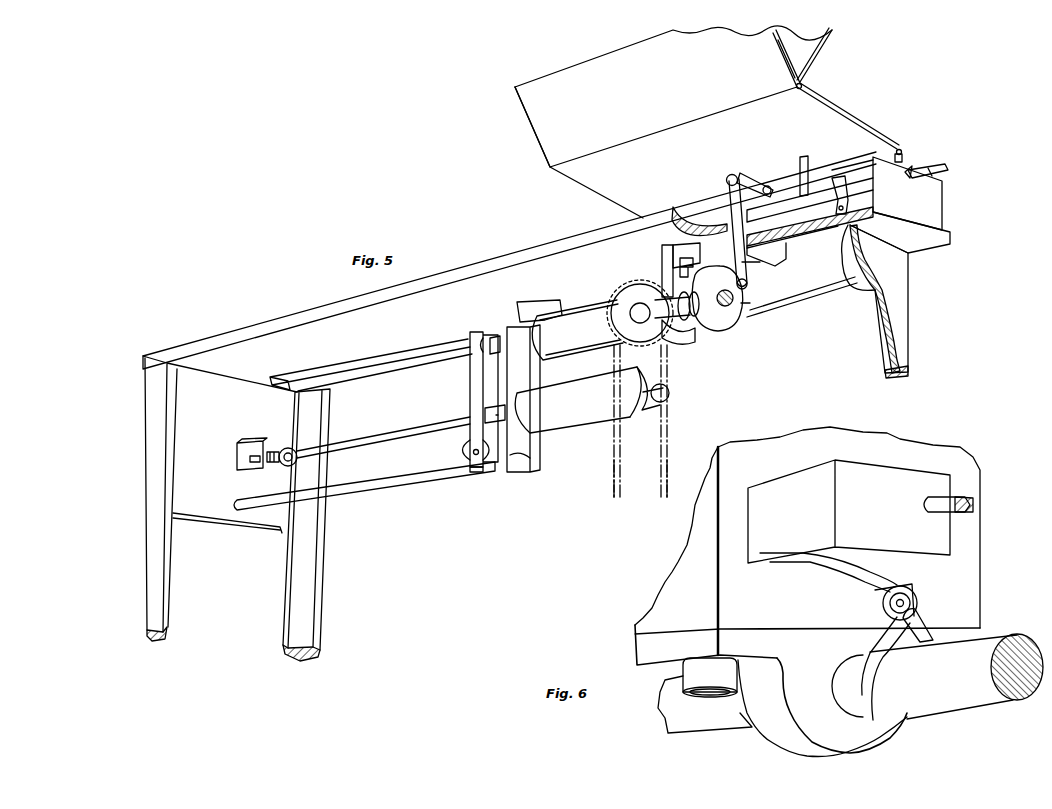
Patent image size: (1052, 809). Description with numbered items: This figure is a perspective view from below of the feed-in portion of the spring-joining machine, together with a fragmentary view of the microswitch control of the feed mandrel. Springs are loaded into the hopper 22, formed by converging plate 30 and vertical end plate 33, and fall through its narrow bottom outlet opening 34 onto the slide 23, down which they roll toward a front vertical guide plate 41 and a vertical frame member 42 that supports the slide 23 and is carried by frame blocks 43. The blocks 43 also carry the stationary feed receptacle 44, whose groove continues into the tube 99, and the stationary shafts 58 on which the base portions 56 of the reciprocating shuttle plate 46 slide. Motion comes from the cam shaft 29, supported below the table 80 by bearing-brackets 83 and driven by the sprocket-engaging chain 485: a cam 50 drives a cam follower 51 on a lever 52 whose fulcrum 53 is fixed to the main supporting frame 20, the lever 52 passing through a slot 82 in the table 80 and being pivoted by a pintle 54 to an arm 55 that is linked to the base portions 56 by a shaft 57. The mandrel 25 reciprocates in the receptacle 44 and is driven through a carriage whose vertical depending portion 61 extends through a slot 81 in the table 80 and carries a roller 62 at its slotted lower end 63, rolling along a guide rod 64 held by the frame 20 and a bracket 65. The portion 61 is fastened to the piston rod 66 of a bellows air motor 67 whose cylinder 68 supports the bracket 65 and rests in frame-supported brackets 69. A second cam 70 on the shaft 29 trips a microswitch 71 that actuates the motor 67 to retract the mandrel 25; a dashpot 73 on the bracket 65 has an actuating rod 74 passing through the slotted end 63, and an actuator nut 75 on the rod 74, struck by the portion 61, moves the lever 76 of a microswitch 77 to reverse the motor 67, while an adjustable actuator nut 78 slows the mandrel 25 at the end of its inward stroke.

In FIG. 5, the main supporting frame 20 is at (170, 560).
In FIG. 5, the hopper 22 is at (839, 47).
In FIG. 5, the slide 23 is at (778, 150).
In FIG. 5, the reciprocating rod or mandrel 25 is at (946, 162).
In FIG. 5, the cam shaft 29 is at (723, 330).
In FIG. 6, the cam shaft 29 is at (966, 705).
In FIG. 5, the converging plate 30 is at (678, 83).
In FIG. 5, the vertical end plate 33 is at (812, 58).
In FIG. 5, the bottom outlet opening 34 is at (805, 88).
In FIG. 5, the front vertical guide plate 41 is at (905, 152).
In FIG. 5, the vertical frame member 42 is at (870, 156).
In FIG. 5, the frame block 43 is at (918, 215).
In FIG. 5, the stationary feed receptacle 44 is at (790, 238).
In FIG. 5, the reciprocating shuttle plate 46 is at (702, 204).
In FIG. 5, the cam 50 is at (750, 303).
In FIG. 5, the cam follower 51 is at (750, 290).
In FIG. 5, the lever 52 is at (759, 261).
In FIG. 5, the fulcrum 53 is at (736, 250).
In FIG. 5, the pintle 54 is at (740, 176).
In FIG. 5, the arm 55 is at (764, 185).
In FIG. 5, the base portion 56 is at (805, 172).
In FIG. 5, the shaft 57 is at (771, 187).
In FIG. 5, the stationary shaft 58 is at (845, 188).
In FIG. 5, the vertical depending portion 61 is at (470, 382).
In FIG. 5, the roller 62 is at (470, 452).
In FIG. 5, the slotted lower end 63 is at (480, 472).
In FIG. 5, the guide rod 64 is at (380, 490).
In FIG. 5, the bracket 65 is at (532, 382).
In FIG. 5, the piston rod 66 is at (466, 342).
In FIG. 5, the bellows air motor 67 is at (604, 304).
In FIG. 5, the cylinder 68 is at (581, 338).
In FIG. 5, the frame-supported bracket 69 is at (866, 273).
In FIG. 5, the cam 70 is at (680, 334).
In FIG. 6, the cam 70 is at (925, 626).
In FIG. 5, the microswitch 71 is at (692, 259).
In FIG. 6, the microswitch 71 is at (896, 530).
In FIG. 5, the dashpot 73 is at (582, 413).
In FIG. 5, the actuating rod 74 is at (360, 442).
In FIG. 5, the actuator nut 75 is at (286, 448).
In FIG. 5, the lever 76 is at (256, 464).
In FIG. 5, the microswitch 77 is at (237, 455).
In FIG. 5, the adjustable actuator nut 78 is at (480, 414).
In FIG. 5, the table 80 is at (533, 257).
In FIG. 5, the slot 81 is at (370, 356).
In FIG. 5, the slot 82 is at (786, 280).
In FIG. 5, the bearing-bracket 83 is at (658, 262).
In FIG. 6, the bearing-bracket 83 is at (760, 606).
In FIG. 5, the tube 99 is at (928, 168).
In FIG. 5, the chain 485 is at (612, 478).